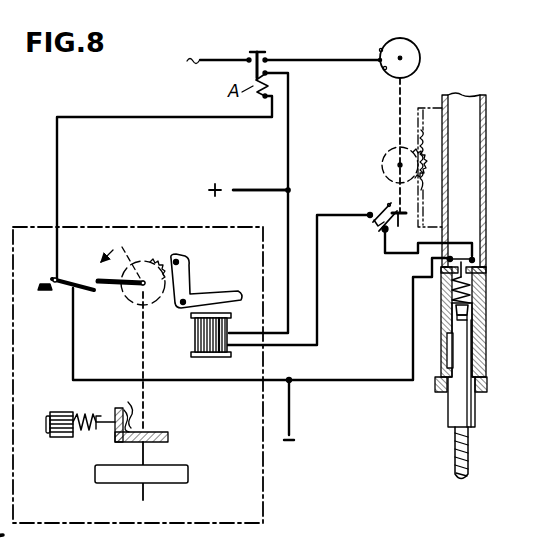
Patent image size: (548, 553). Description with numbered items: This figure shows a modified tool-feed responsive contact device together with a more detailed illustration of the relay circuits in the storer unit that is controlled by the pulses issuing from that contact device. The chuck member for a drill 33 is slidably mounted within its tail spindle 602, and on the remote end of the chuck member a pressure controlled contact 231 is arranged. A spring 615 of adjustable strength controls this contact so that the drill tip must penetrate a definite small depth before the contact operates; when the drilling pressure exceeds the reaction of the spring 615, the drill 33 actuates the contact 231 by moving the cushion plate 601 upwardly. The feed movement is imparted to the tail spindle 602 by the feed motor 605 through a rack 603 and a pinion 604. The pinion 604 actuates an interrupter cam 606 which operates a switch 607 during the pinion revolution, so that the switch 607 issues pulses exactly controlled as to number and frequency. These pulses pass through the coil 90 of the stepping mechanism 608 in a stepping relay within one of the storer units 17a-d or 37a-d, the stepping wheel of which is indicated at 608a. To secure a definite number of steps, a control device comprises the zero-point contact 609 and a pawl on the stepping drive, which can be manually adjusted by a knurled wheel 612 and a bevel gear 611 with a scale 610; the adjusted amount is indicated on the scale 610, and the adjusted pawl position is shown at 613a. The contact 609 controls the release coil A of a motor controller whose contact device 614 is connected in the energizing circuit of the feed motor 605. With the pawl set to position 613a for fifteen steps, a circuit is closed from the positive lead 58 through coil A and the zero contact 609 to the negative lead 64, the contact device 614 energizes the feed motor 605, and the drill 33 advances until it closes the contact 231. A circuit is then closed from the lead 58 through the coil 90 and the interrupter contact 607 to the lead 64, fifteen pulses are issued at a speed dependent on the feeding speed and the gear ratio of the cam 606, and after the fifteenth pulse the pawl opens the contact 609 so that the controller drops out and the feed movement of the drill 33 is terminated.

The contact device 614 is at (256, 52).
The feed motor 605 is at (409, 42).
The rack 603 is at (428, 110).
The pinion 604 is at (382, 160).
The switch 607 is at (381, 206).
The interrupter cam 606 is at (408, 232).
The pressure controlled contact 231 is at (478, 247).
The spring 615 is at (474, 282).
The cushion plate 601 is at (469, 308).
The tail spindle 602 is at (484, 346).
The drill 33 is at (470, 455).
The positive lead 58 is at (257, 187).
The negative lead 64 is at (290, 412).
The zero-point contact 609 is at (46, 281).
The pawl position 613a is at (128, 250).
The stepping mechanism 608 is at (181, 278).
The ratchet wheel 608a is at (135, 306).
The coil 90 is at (195, 337).
The knurled wheel 612 is at (58, 410).
The bevel gear 611 is at (135, 413).
The scale 610 is at (157, 484).
The storer units 17a-d is at (258, 493).
The storer units 37a-d is at (311, 511).